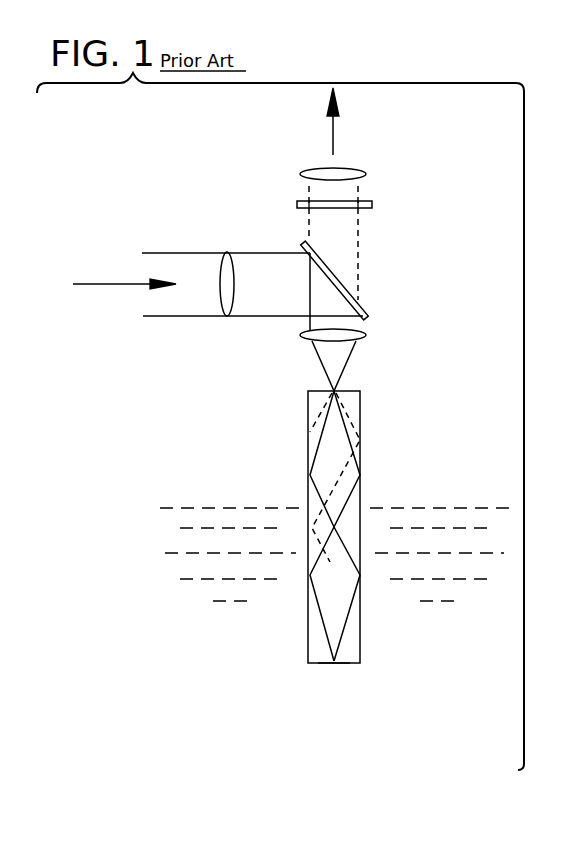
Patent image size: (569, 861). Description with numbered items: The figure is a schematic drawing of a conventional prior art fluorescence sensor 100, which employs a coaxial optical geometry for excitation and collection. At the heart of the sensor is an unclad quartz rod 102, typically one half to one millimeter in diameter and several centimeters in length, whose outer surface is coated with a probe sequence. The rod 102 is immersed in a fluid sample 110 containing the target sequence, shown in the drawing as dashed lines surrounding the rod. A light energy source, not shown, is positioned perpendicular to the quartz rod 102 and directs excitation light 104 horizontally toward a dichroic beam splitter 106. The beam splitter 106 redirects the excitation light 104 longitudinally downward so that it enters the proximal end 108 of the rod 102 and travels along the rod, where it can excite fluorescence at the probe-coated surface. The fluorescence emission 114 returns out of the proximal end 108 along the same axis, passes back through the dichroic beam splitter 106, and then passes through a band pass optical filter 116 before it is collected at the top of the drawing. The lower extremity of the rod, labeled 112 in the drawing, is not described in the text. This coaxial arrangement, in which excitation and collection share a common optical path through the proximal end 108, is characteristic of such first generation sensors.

The fluorescence sensor 100 is at (190, 422).
The quartz rod 102 is at (362, 632).
The excitation light 104 is at (97, 284).
The dichroic beam splitter 106 is at (366, 311).
The proximal end 108 is at (340, 391).
The fluid sample 110 is at (377, 508).
The tube output end 112 is at (342, 665).
The fluorescence emission 114 is at (333, 136).
The band pass optical filter 116 is at (372, 205).